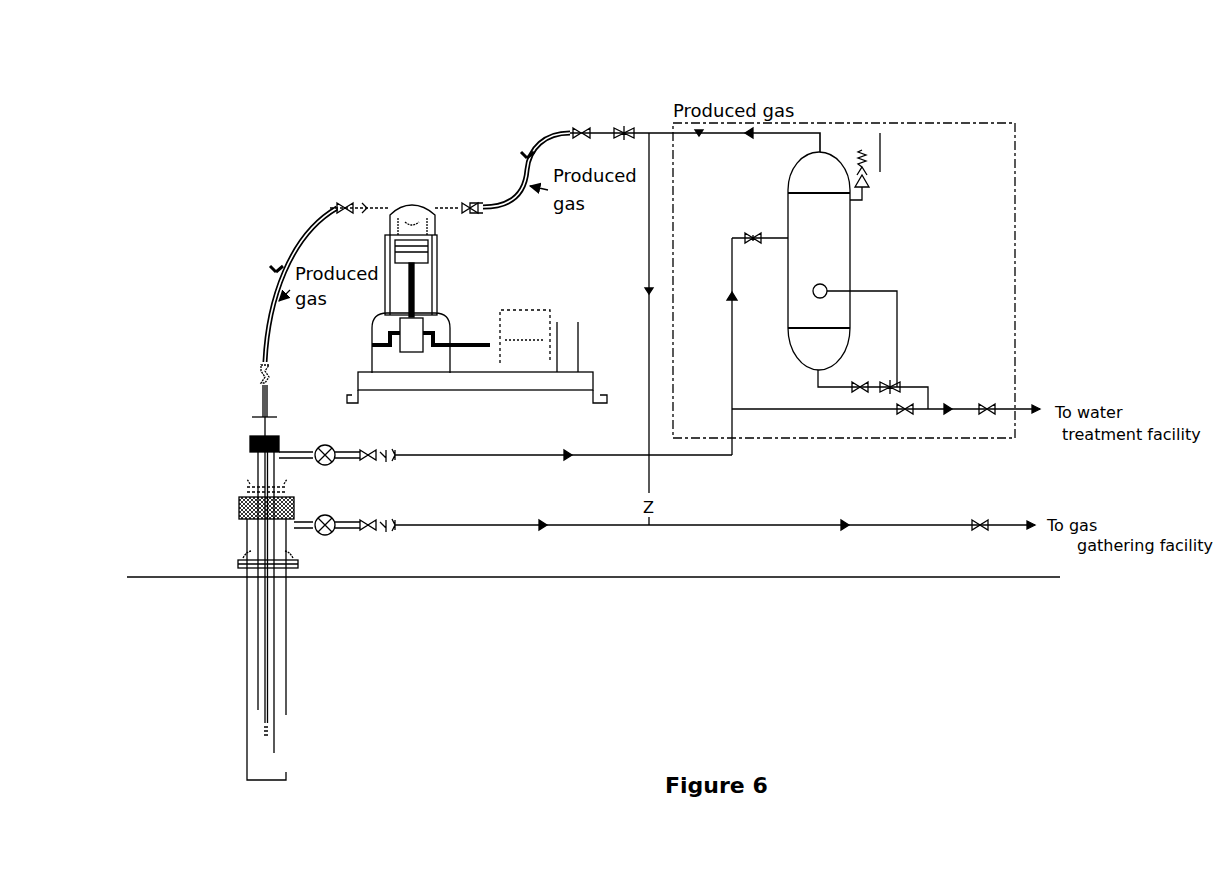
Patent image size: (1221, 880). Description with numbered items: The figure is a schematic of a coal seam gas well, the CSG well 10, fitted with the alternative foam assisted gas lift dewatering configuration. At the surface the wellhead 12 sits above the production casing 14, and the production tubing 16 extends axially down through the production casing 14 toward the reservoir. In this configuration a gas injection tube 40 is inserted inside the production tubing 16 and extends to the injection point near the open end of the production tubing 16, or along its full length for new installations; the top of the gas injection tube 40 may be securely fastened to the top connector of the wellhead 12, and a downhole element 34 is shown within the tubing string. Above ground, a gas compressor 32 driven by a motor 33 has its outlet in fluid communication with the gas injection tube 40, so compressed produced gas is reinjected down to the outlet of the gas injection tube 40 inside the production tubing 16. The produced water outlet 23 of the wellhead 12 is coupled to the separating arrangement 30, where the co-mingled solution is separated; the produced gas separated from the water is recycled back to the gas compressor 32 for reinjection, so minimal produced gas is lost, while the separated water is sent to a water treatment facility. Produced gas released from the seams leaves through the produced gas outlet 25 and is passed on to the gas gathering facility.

The CSG well 10 is at (233, 565).
The wellhead 12 is at (233, 513).
The production casing 14 is at (243, 642).
The production tubing 16 is at (255, 678).
The produced water outlet 23 is at (352, 445).
The produced gas outlet 25 is at (375, 537).
The separating arrangement 30 is at (1026, 282).
The gas compressor 32 is at (438, 300).
The motor 33 is at (567, 310).
The downhole pump rod 34 is at (253, 727).
The gas injection tube 40 is at (262, 402).